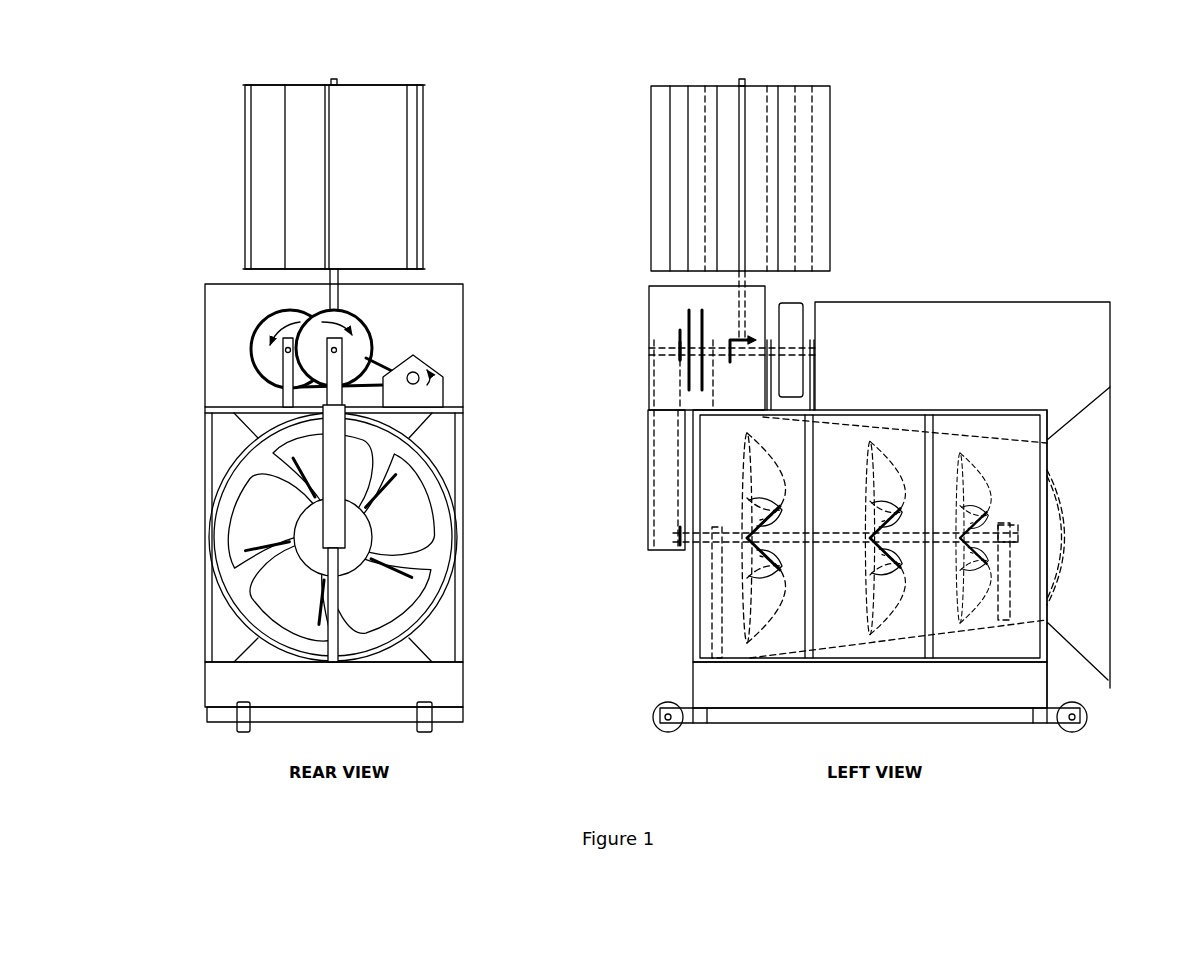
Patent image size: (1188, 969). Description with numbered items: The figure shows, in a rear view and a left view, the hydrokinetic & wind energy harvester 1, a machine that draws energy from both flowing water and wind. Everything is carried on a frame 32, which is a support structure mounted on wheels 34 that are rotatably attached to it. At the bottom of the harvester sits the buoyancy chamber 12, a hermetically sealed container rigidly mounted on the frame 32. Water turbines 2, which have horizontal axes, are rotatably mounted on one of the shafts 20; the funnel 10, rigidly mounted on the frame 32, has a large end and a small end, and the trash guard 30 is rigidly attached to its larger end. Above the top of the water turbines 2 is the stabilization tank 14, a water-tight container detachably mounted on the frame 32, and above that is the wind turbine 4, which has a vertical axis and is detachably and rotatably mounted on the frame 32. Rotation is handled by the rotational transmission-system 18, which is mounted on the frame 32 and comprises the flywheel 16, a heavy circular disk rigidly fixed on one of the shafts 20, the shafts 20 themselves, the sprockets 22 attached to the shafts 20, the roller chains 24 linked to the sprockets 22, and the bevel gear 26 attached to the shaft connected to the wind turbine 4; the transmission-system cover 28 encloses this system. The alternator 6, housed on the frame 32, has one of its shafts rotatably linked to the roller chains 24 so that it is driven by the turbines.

The hydrokinetic & wind energy harvester 1 is at (181, 151).
The water turbines 2 is at (289, 484).
The wind turbine 4 is at (395, 148).
The alternator 6 is at (433, 388).
The funnel 10 is at (1093, 453).
The buoyancy chamber 12 is at (220, 685).
The stabilization tank 14 is at (969, 328).
The flywheel 16 is at (805, 300).
The rotational transmission-system 18 is at (243, 327).
The shafts 20 is at (675, 537).
The sprockets 22 is at (677, 320).
The roller chains 24 is at (678, 450).
The bevel gear 26 is at (733, 348).
The transmission-system cover 28 is at (205, 370).
The trash guard 30 is at (1108, 592).
The frame 32 is at (203, 605).
The wheels 34 is at (243, 732).